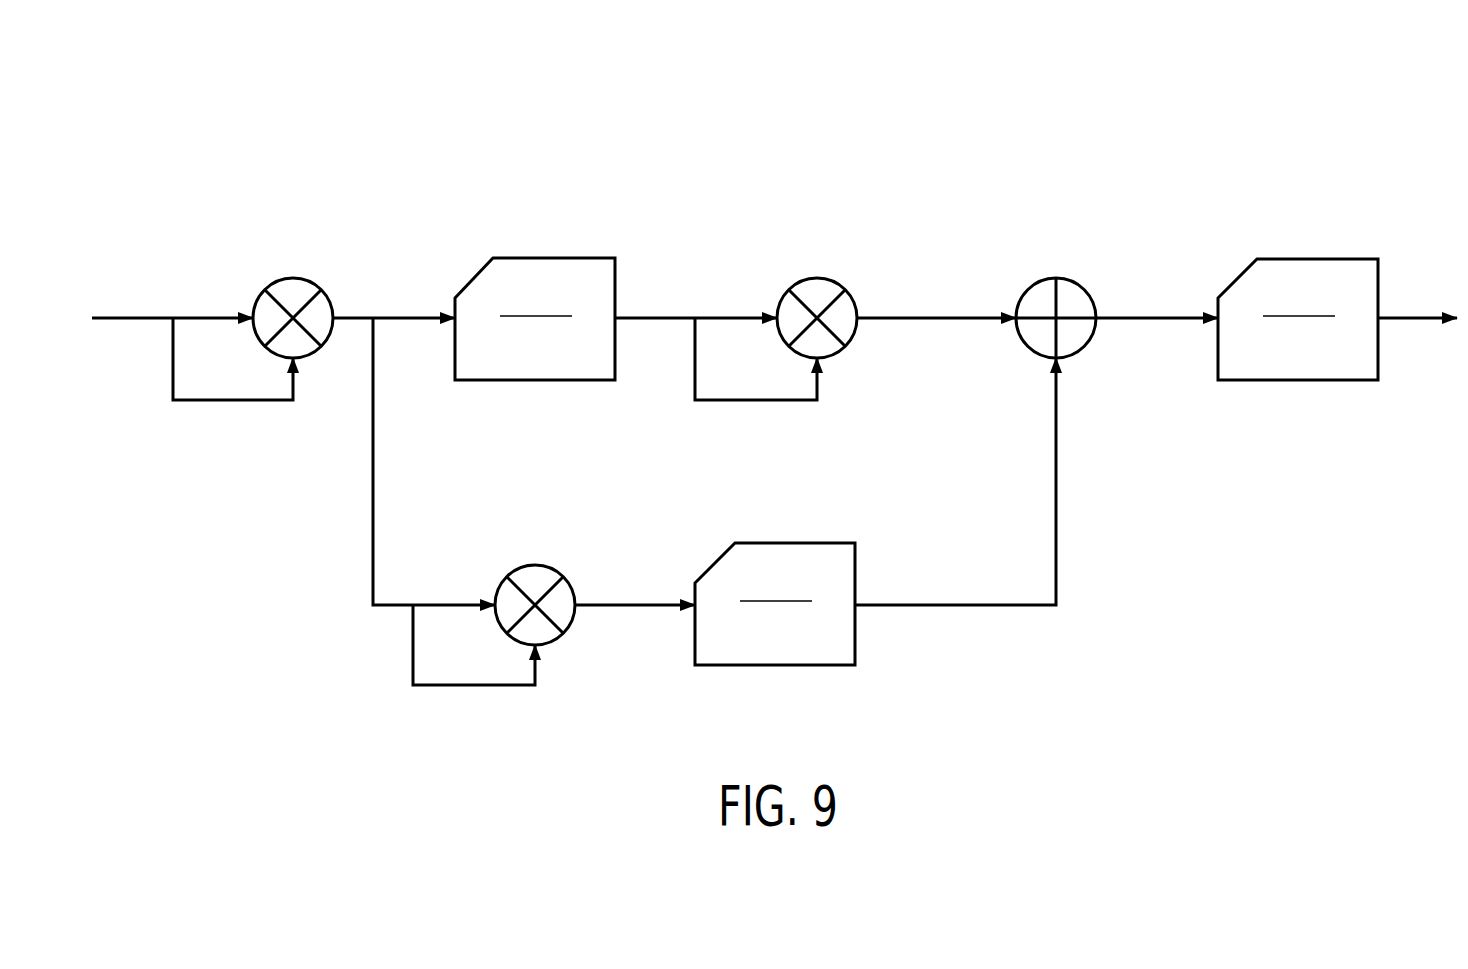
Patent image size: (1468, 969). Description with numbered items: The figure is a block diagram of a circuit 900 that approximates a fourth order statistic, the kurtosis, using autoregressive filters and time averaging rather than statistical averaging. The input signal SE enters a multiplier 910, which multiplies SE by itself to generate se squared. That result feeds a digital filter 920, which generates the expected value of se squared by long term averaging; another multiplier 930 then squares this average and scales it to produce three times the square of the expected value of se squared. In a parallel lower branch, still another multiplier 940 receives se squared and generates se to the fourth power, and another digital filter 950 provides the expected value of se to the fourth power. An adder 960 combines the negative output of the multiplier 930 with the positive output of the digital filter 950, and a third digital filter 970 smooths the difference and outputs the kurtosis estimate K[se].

The circuit 900 is at (494, 150).
The multiplier 910 is at (293, 278).
The digital filter 920 is at (548, 258).
The multiplier 930 is at (817, 278).
The multiplier 940 is at (535, 565).
The digital filter 950 is at (785, 543).
The adder 960 is at (1056, 278).
The third digital filter 970 is at (1297, 259).